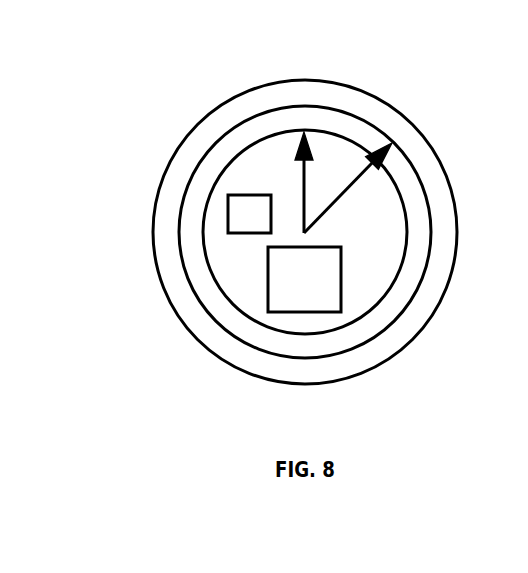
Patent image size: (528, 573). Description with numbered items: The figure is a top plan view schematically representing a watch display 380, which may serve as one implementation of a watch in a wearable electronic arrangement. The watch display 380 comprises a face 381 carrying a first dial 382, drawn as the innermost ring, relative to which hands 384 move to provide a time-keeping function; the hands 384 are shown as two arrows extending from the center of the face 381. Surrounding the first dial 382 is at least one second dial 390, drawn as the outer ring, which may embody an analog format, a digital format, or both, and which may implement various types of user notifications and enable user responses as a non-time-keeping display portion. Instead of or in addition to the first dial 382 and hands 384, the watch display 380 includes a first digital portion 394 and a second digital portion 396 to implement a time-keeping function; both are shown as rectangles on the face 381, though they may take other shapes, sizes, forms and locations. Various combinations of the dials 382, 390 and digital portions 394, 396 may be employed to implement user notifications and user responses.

The watch display 380 is at (272, 64).
The face 381 is at (386, 233).
The first dial 382 is at (237, 140).
The hands 384 is at (345, 187).
The second dial 390 is at (428, 165).
The first digital portion 394 is at (228, 205).
The second digital portion 396 is at (268, 280).